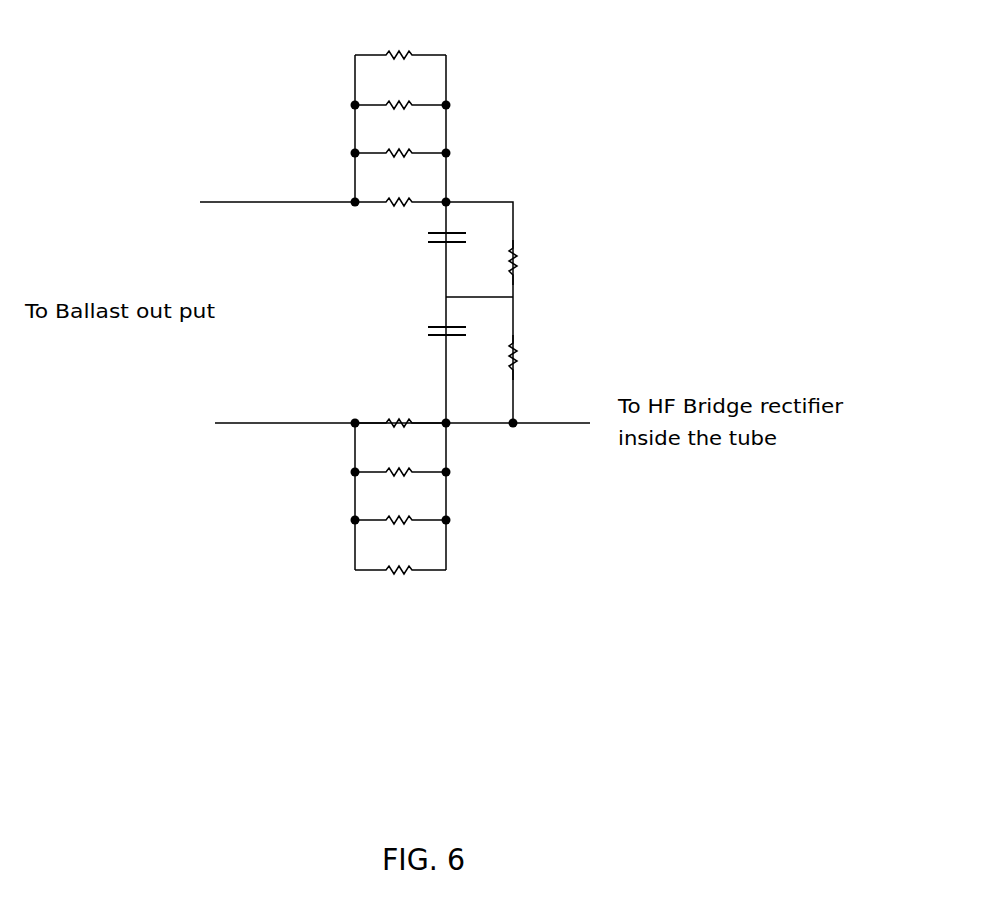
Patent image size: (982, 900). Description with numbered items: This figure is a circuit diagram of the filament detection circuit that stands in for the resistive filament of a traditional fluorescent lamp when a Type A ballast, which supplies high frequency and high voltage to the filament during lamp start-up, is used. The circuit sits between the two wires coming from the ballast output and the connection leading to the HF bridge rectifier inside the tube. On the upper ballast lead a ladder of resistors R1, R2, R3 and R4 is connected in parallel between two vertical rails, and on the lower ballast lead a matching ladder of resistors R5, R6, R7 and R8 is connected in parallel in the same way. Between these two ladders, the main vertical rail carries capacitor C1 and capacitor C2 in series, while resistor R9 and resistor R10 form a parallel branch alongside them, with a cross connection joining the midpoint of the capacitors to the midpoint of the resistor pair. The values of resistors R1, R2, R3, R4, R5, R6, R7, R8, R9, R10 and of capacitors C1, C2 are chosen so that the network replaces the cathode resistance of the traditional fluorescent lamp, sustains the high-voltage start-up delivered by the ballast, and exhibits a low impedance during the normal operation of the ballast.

The resistor R1 is at (400, 39).
The resistor R2 is at (400, 91).
The resistor R3 is at (378, 156).
The resistor R4 is at (400, 187).
The resistor R5 is at (400, 586).
The resistor R6 is at (400, 536).
The resistor R7 is at (400, 487).
The resistor R8 is at (400, 410).
The resistor R9 is at (528, 262).
The resistor R10 is at (534, 357).
The capacitor C1 is at (433, 228).
The capacitor C2 is at (429, 330).